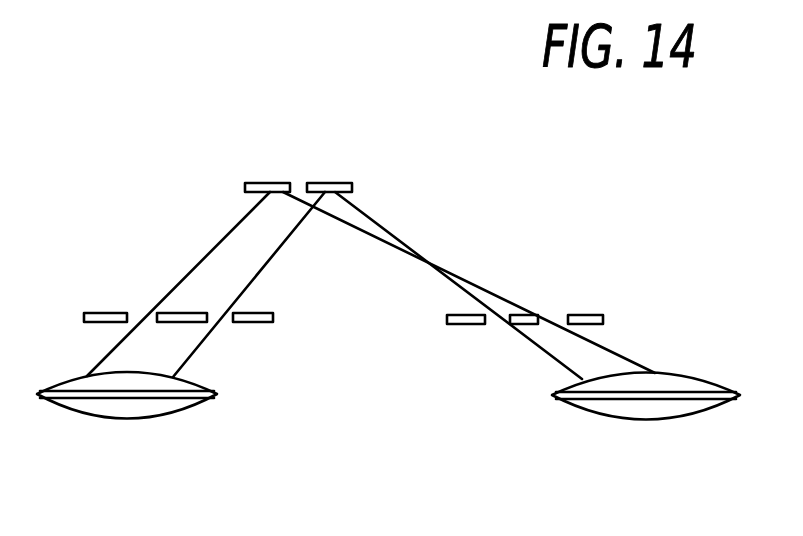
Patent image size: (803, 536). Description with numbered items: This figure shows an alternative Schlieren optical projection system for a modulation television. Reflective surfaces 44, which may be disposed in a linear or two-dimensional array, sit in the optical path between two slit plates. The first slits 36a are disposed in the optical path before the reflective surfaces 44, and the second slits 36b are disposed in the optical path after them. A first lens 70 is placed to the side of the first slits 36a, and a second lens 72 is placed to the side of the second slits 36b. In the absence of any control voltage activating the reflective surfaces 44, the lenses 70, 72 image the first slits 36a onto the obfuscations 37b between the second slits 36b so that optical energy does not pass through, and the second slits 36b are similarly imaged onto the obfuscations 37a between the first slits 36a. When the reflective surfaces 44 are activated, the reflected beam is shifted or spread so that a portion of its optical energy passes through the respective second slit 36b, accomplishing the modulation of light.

The reflective surfaces 44 is at (289, 183).
The first slits 36a is at (220, 304).
The obfuscations 37a is at (275, 318).
The second slits 36b is at (551, 307).
The obfuscations 37b is at (597, 315).
The first lens 70 is at (170, 421).
The second lens 72 is at (720, 422).